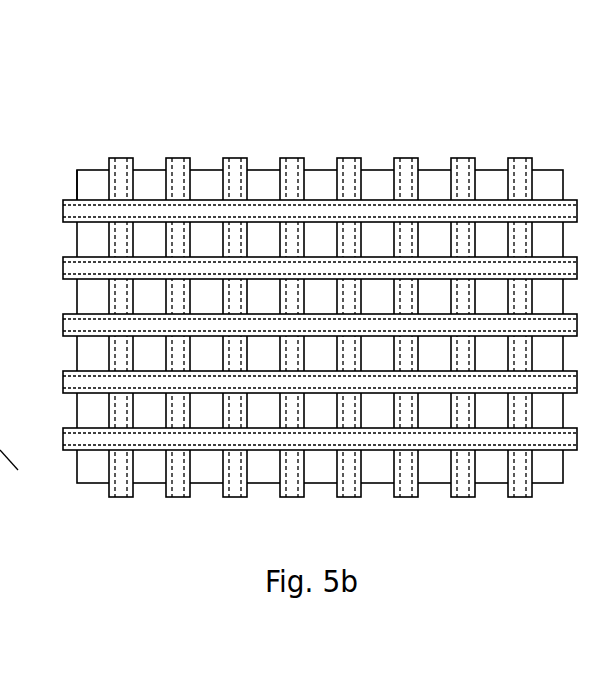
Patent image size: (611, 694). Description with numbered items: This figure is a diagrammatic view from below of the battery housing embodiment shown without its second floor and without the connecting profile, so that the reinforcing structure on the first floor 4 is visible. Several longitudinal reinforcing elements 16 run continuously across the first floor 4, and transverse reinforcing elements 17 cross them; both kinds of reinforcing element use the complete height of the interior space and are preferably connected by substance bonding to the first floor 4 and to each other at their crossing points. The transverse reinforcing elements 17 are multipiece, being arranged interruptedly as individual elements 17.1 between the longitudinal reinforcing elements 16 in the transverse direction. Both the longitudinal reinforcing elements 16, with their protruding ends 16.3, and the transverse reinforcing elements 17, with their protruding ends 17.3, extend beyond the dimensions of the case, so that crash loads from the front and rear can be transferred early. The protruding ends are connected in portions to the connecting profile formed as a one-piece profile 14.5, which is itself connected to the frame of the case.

The first floor 4 is at (207, 465).
The longitudinal reinforcing element 16 is at (87, 209).
The protruding end of longitudinal reinforcing element 16.3 is at (70, 170).
The transverse reinforcing element 17 is at (121, 174).
The individual element of transverse reinforcing element 17.1 is at (290, 242).
The protruding end of transverse reinforcing element 17.3 is at (204, 150).
The one-piece profile 14.5 is at (0, 452).